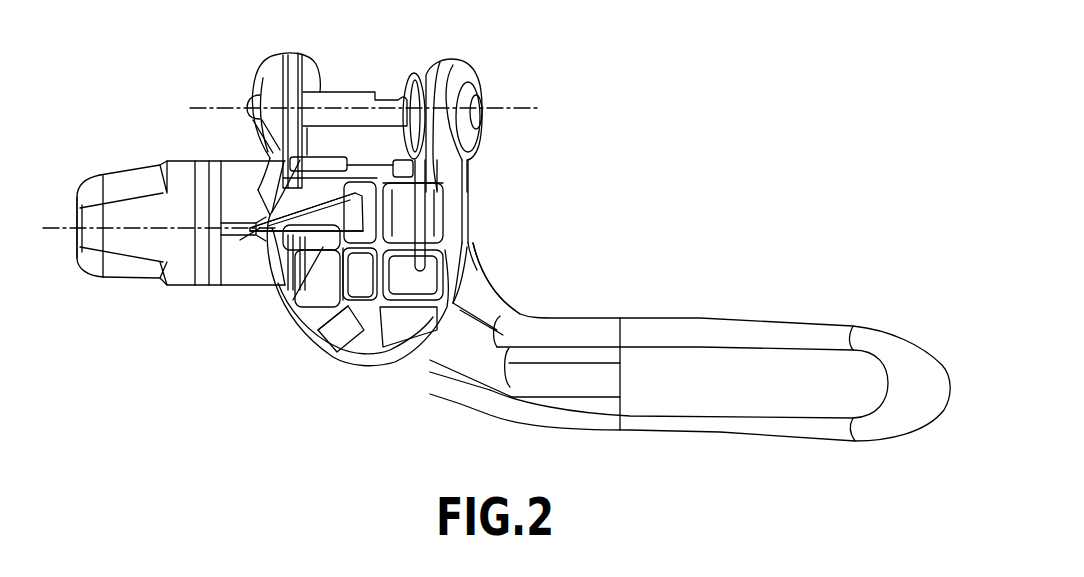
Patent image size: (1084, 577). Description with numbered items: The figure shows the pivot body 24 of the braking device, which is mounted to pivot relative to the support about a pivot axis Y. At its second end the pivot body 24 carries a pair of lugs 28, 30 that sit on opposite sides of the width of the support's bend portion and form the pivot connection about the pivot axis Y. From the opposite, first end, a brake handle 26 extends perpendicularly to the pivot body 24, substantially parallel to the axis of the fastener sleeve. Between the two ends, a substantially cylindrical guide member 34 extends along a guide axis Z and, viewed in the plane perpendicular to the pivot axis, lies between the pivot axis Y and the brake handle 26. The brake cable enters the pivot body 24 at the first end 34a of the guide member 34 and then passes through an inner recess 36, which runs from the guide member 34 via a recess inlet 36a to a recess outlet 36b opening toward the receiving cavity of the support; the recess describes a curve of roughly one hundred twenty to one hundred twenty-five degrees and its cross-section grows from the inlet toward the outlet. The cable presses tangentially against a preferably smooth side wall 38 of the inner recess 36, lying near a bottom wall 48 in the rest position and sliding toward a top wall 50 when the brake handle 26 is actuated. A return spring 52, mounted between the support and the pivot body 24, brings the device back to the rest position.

The pivot body 24 is at (588, 93).
The brake handle 26 is at (753, 318).
The lug 28 is at (458, 67).
The lug 30 is at (281, 63).
The guide member 34 is at (132, 282).
The first end of the guide member 34a is at (76, 196).
The inner recess 36 is at (306, 298).
The recess inlet 36a is at (214, 286).
The recess outlet 36b is at (362, 207).
The side wall 38 is at (300, 226).
The bottom wall 48 is at (340, 333).
The top wall 50 is at (368, 292).
The return spring 52 is at (412, 73).
The pivot axis Y is at (522, 108).
The guide axis Z is at (56, 226).